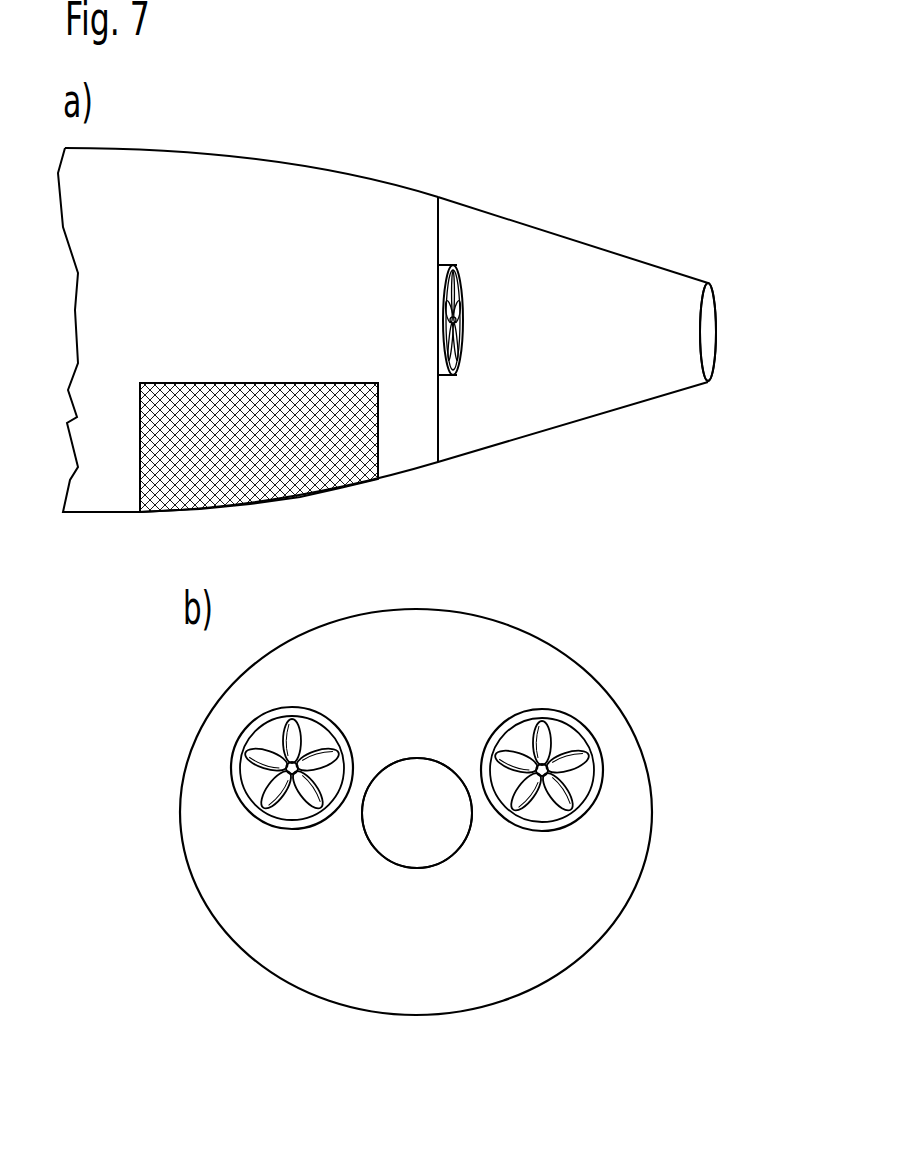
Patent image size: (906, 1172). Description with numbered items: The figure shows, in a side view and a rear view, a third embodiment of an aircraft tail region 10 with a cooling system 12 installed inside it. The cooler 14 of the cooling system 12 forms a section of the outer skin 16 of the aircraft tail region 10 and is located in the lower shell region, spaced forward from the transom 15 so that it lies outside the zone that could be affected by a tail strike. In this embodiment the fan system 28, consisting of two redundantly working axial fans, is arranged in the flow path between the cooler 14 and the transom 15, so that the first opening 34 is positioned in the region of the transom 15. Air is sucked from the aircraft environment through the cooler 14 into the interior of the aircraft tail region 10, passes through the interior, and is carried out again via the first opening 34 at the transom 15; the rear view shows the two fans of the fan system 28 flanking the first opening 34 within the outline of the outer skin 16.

The aircraft tail region 10 is at (557, 196).
The cooling system 12 is at (306, 268).
The cooler 14 is at (200, 390).
The transom 15 is at (724, 297).
The outer skin 16 is at (362, 172).
The fan system 28 is at (463, 304).
The first opening 34 is at (712, 332).